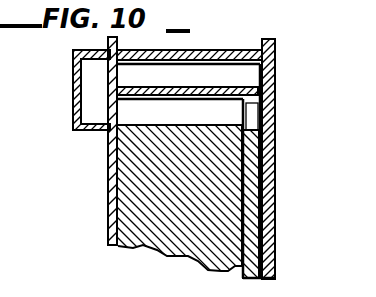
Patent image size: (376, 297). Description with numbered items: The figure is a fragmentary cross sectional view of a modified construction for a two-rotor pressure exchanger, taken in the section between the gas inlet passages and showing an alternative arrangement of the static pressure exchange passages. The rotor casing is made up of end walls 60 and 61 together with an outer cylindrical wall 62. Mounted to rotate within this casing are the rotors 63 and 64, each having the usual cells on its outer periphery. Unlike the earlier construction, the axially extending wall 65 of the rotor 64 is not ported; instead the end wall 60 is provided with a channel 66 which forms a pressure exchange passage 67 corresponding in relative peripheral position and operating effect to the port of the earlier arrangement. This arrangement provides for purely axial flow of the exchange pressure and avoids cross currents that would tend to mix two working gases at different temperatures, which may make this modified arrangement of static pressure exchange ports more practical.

The end wall 60 is at (110, 188).
The end wall 61 is at (271, 161).
The outer cylindrical wall 62 is at (218, 50).
The rotor 63 is at (133, 220).
The rotor 64 is at (250, 220).
The axially extending wall 65 is at (231, 90).
The channel 66 is at (76, 90).
The pressure exchange passage 67 is at (98, 100).